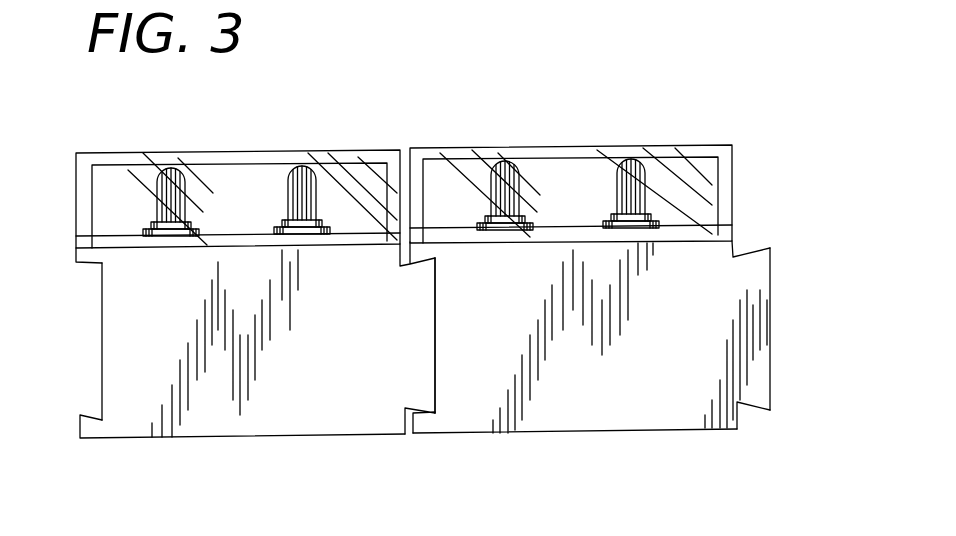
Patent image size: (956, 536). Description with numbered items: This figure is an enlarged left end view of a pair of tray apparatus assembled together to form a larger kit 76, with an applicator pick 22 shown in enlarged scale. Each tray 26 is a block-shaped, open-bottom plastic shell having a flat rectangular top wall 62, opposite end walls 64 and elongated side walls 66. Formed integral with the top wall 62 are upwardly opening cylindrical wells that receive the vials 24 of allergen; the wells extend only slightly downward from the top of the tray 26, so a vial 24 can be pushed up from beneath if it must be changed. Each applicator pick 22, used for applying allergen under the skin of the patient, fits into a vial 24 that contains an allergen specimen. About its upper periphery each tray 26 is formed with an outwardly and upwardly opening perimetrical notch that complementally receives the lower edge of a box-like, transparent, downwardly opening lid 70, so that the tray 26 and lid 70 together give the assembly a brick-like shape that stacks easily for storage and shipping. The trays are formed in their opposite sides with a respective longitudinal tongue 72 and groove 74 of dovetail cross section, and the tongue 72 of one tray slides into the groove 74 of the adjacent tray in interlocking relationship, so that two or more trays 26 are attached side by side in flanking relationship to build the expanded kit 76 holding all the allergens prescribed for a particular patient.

The applicator pick 22 is at (522, 167).
The vial 24 is at (542, 216).
The tray 26 is at (243, 442).
The top wall 62 is at (112, 233).
The end wall 64 is at (434, 432).
The side wall 66 is at (77, 256).
The lid 70 is at (270, 151).
The tongue 72 is at (438, 331).
The groove 74 is at (102, 344).
The kit 76 is at (440, 108).